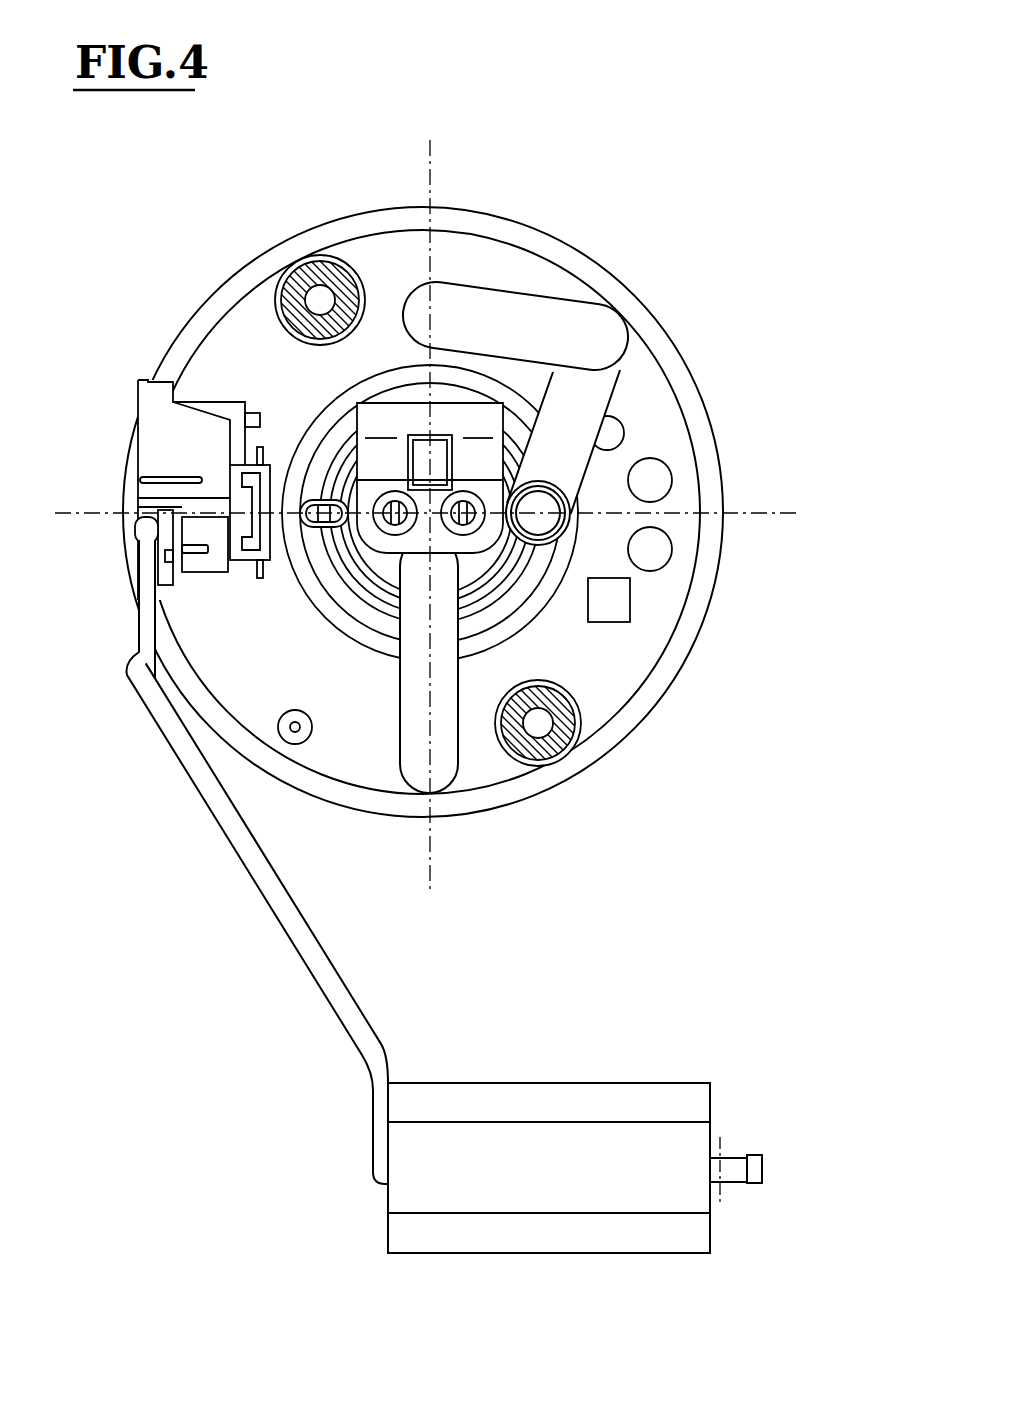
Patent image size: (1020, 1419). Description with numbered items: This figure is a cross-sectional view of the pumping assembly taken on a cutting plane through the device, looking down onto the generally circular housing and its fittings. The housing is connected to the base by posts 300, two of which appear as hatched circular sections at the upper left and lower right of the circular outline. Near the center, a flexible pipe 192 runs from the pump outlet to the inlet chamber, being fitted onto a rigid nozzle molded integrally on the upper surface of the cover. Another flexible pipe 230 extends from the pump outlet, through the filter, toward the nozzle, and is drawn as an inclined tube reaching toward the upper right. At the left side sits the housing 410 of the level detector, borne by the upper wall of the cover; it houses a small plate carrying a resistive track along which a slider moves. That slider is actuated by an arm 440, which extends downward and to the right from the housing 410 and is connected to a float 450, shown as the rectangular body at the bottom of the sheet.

The flexible pipe 192 is at (440, 748).
The flexible pipe 230 is at (587, 333).
The posts 300 is at (303, 277).
The housing 410 is at (173, 452).
The arm 440 is at (330, 988).
The float 450 is at (518, 1098).